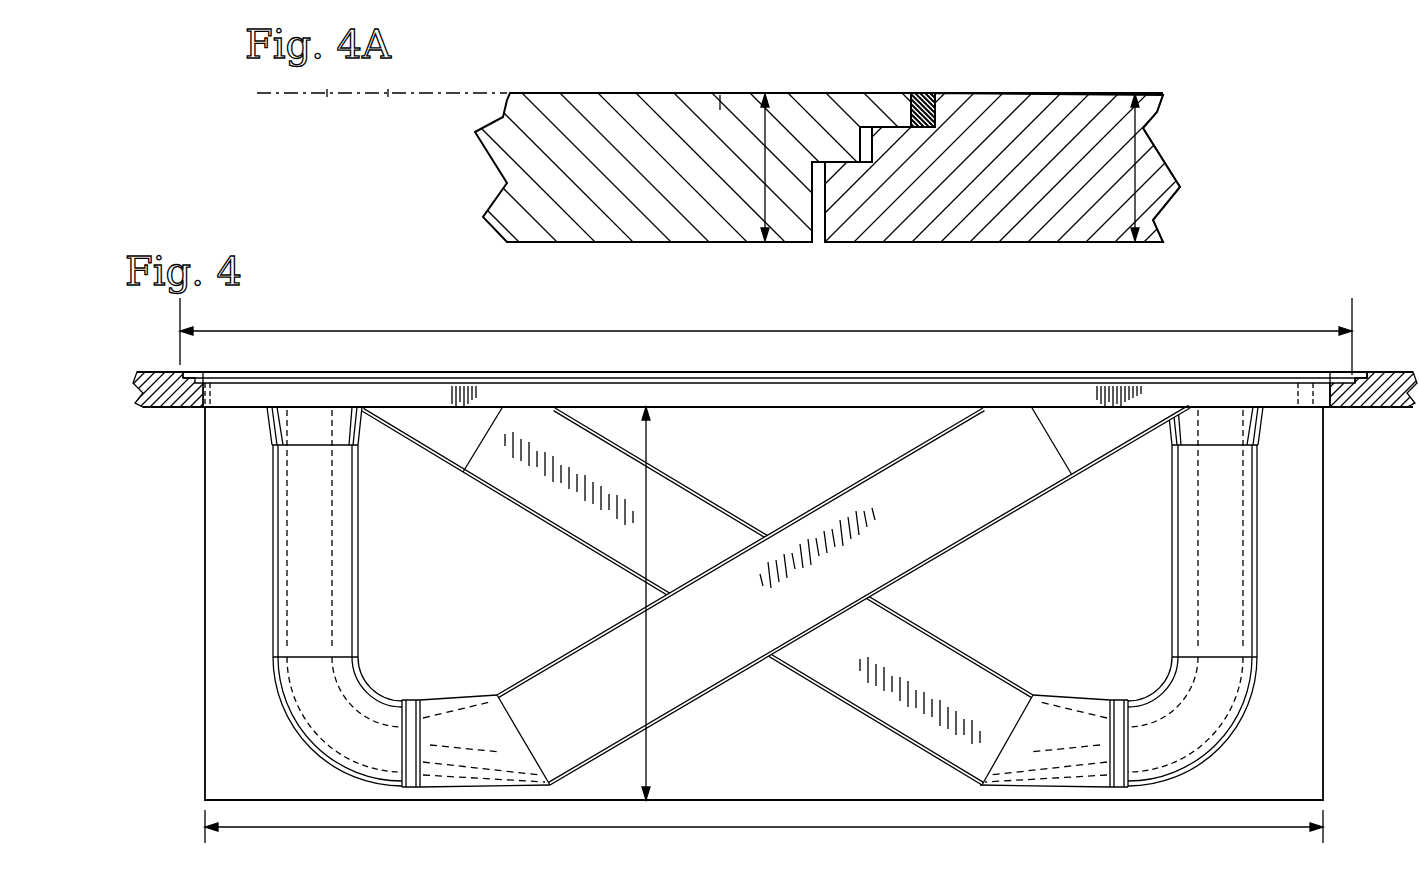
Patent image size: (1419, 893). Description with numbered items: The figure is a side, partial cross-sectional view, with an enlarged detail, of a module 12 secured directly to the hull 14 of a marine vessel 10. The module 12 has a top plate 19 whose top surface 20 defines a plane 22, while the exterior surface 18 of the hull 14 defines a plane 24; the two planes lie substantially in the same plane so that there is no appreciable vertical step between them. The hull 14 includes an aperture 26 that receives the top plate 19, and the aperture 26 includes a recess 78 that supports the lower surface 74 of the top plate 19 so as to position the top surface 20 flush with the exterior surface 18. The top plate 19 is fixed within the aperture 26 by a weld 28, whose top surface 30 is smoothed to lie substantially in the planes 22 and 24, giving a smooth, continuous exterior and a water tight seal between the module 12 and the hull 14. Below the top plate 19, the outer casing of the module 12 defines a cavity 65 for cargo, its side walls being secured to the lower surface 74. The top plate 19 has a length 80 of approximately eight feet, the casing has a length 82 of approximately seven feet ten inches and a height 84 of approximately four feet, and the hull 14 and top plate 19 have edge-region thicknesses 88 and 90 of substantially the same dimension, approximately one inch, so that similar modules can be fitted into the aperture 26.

In FIG. 4A, the marine vessel 10 is at (1147, 112).
In FIG. 4, the marine vessel 10 is at (1380, 398).
In FIG. 4A, the module 12 is at (547, 102).
In FIG. 4, the module 12 is at (937, 393).
In FIG. 4A, the hull 14 is at (1105, 105).
In FIG. 4, the hull 14 is at (1353, 398).
In FIG. 4A, the exterior surface 18 is at (1157, 95).
In FIG. 4A, the top plate 19 is at (727, 105).
In FIG. 4, the top plate 19 is at (1087, 375).
In FIG. 4A, the top surface 20 is at (607, 95).
In FIG. 4A, the plane 22 is at (327, 95).
In FIG. 4A, the plane 24 is at (388, 95).
In FIG. 4A, the aperture 26 is at (935, 100).
In FIG. 4, the aperture 26 is at (1355, 378).
In FIG. 4A, the weld 28 is at (918, 98).
In FIG. 4, the weld 28 is at (1352, 376).
In FIG. 4A, the top surface 30 is at (921, 93).
In FIG. 4, the cavity 65 is at (757, 770).
In FIG. 4A, the lower surface 74 is at (900, 128).
In FIG. 4, the lower surface 74 is at (740, 385).
In FIG. 4A, the recess 78 is at (940, 118).
In FIG. 4, the recess 78 is at (1352, 378).
In FIG. 4, the length 80 is at (852, 331).
In FIG. 4, the length 82 is at (970, 828).
In FIG. 4, the height 84 is at (646, 437).
In FIG. 4A, the thickness 88 is at (1137, 203).
In FIG. 4A, the thickness 90 is at (763, 203).